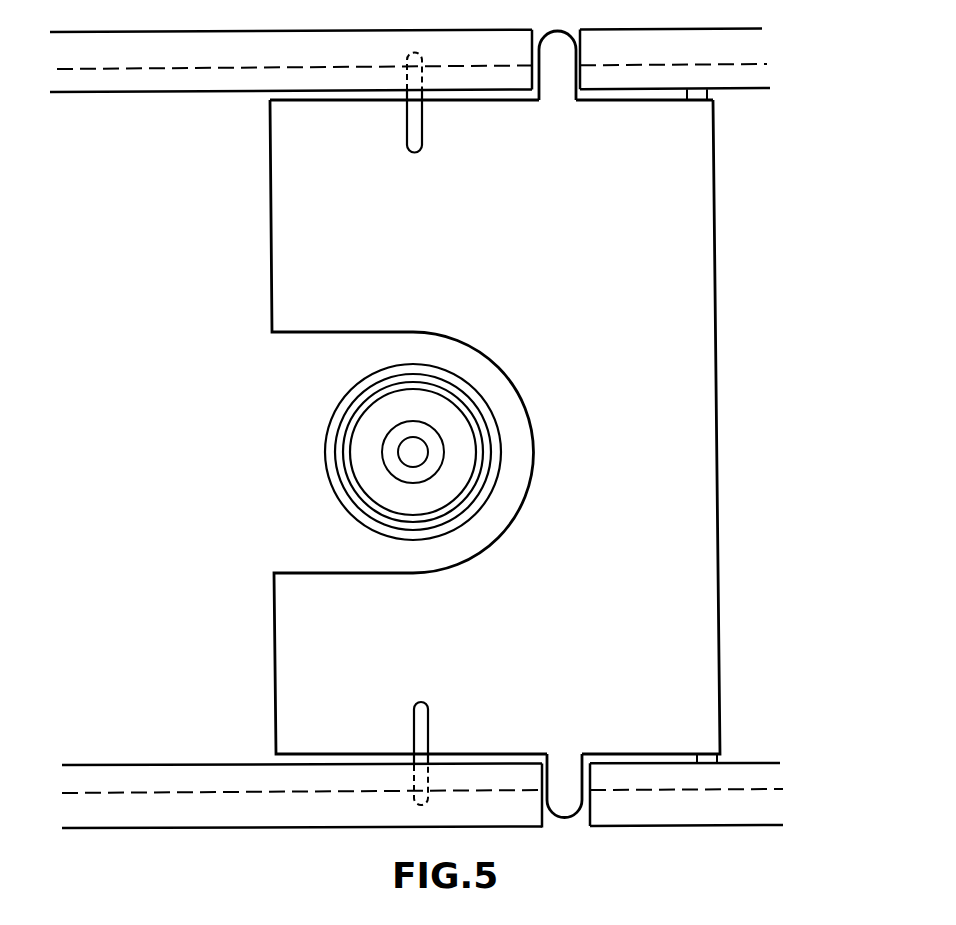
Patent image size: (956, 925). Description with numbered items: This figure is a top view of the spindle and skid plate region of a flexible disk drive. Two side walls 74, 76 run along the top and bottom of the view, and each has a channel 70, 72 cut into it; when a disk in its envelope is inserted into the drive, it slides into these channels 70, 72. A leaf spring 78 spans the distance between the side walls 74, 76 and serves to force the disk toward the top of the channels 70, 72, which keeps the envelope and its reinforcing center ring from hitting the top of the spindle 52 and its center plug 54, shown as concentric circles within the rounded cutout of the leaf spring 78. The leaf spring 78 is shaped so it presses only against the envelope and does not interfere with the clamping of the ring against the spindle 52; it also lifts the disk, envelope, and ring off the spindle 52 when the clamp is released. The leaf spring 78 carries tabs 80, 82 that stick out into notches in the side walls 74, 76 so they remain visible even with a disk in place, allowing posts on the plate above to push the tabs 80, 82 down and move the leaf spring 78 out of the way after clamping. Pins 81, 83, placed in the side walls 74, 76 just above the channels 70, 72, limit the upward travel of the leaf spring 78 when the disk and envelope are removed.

The spindle 52 is at (334, 492).
The center plug 54 is at (348, 458).
The channel 70 is at (764, 78).
The channel 72 is at (766, 778).
The side wall 74 is at (722, 26).
The side wall 76 is at (744, 827).
The leaf spring 78 is at (268, 210).
The tab 80 is at (570, 34).
The pin 81 is at (404, 147).
The tab 82 is at (582, 820).
The pin 83 is at (411, 720).